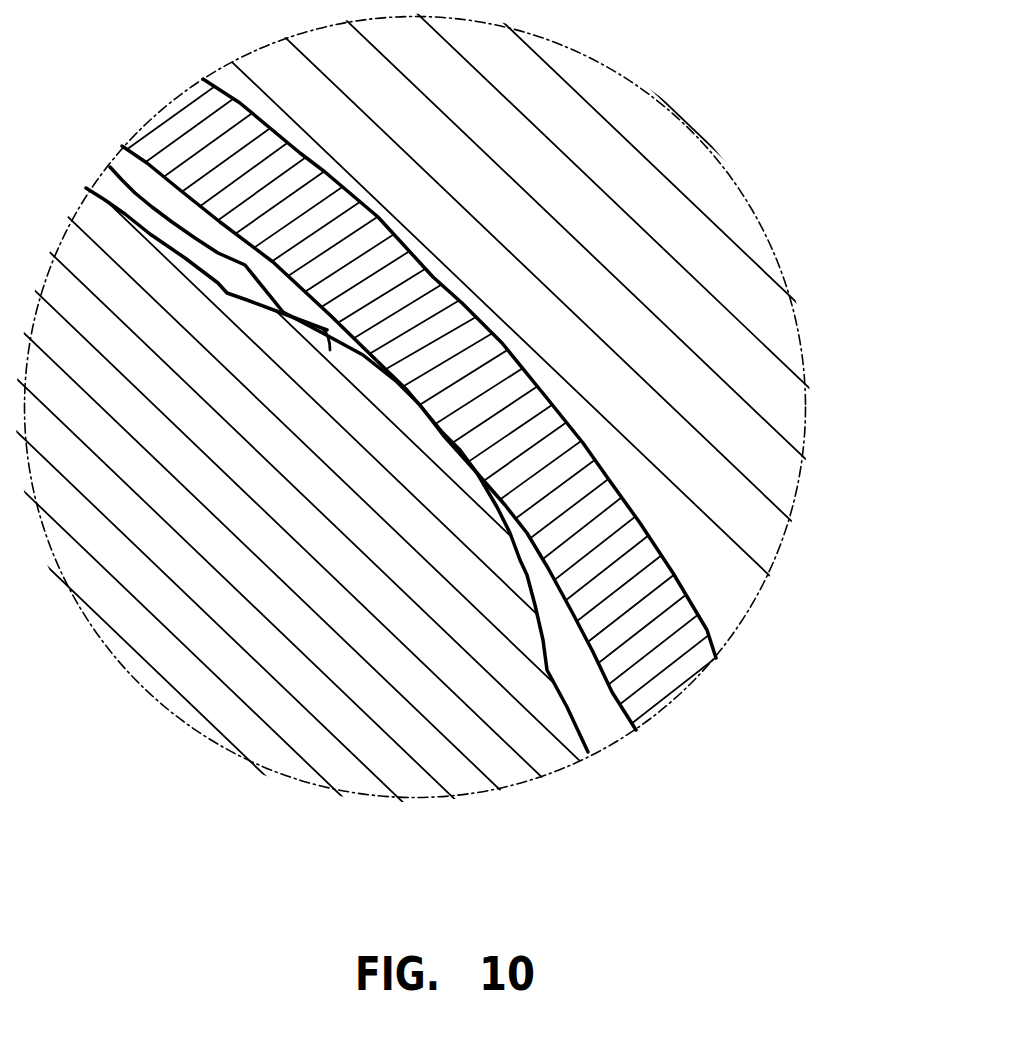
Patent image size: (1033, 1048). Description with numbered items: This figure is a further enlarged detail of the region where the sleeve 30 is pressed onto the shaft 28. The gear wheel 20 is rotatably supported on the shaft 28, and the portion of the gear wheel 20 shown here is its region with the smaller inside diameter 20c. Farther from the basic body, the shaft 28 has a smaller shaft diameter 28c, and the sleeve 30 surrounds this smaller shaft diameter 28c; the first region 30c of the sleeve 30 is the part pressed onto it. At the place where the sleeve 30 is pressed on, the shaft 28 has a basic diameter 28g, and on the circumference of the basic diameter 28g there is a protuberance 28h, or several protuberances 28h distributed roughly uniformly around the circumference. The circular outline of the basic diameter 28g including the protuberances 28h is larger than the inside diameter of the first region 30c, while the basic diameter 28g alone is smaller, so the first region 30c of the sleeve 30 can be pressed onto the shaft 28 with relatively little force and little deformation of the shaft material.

The gear wheel 20 is at (684, 157).
The smaller inside diameter 20c is at (713, 640).
The shaft 28 is at (273, 750).
The smaller shaft diameter 28c is at (505, 770).
The basic diameter 28g is at (581, 728).
The protuberance 28h is at (110, 167).
The sleeve 30 is at (697, 658).
The first region 30c is at (653, 694).